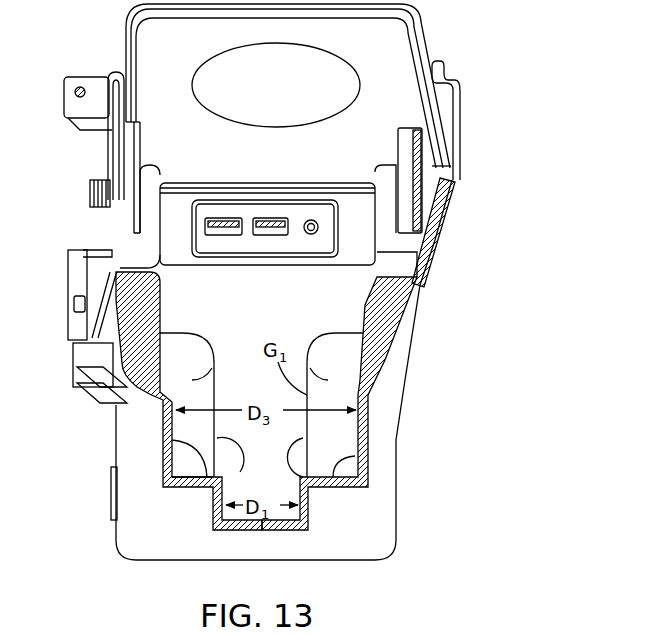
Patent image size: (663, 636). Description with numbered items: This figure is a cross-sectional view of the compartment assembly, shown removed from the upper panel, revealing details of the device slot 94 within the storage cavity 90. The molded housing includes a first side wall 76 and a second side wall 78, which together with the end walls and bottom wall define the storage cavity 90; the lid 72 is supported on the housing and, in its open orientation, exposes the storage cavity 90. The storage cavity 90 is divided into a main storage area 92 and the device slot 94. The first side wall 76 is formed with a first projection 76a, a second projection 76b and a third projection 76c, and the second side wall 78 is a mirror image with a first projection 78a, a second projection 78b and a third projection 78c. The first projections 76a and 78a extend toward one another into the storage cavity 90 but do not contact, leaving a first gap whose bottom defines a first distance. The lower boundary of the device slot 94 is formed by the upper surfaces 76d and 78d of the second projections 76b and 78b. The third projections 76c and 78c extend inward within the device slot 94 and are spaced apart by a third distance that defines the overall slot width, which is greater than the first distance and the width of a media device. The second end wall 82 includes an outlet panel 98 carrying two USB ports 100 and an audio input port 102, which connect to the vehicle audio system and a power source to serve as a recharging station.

The lid 72 is at (383, 55).
The first side wall 76 is at (112, 421).
The first projection 76a is at (213, 370).
The second projection 76b is at (225, 492).
The third projection 76c is at (137, 297).
The upper surface 76d is at (165, 437).
The second side wall 78 is at (400, 404).
The first projection 78a is at (327, 367).
The second projection 78b is at (303, 438).
The third projection 78c is at (390, 297).
The upper surface 78d is at (355, 457).
The second end wall 82 is at (214, 285).
The storage cavity 90 is at (176, 278).
The main storage area 92 is at (362, 310).
The device slot 94 is at (190, 478).
The outlet panel 98 is at (247, 240).
The USB ports 100 is at (262, 218).
The audio input port 102 is at (312, 218).